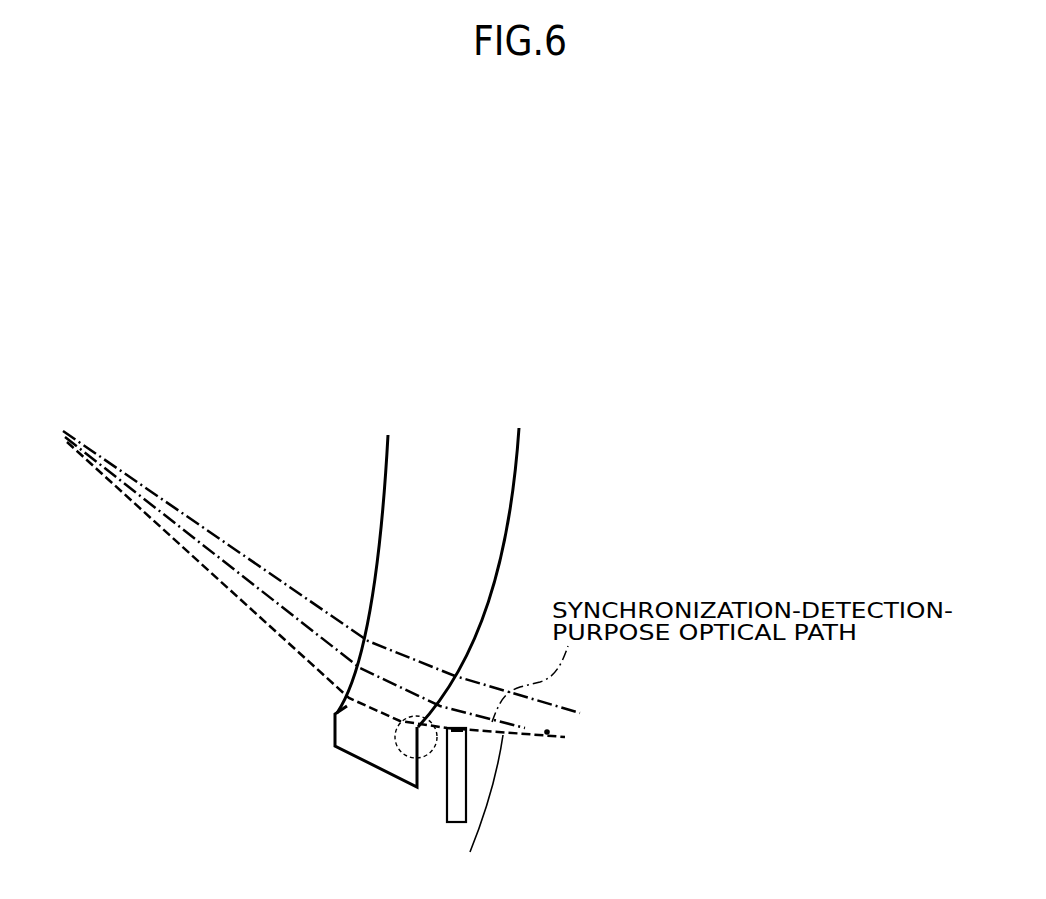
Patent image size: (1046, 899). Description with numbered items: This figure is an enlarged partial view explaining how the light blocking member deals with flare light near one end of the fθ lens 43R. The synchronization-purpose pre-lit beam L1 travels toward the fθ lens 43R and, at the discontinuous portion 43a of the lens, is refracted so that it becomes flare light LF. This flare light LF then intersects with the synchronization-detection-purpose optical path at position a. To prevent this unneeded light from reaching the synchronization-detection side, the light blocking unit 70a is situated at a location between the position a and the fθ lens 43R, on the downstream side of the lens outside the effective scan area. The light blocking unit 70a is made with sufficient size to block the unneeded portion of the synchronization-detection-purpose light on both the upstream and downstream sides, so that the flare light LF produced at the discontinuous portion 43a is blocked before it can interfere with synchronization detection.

The fθ lens 43R is at (485, 520).
The synchronization-purpose pre-lit beam L1 is at (227, 582).
The discontinuous portion 43a is at (397, 747).
The light blocking unit 70a is at (447, 792).
The flare light LF is at (477, 812).
The position a is at (547, 732).